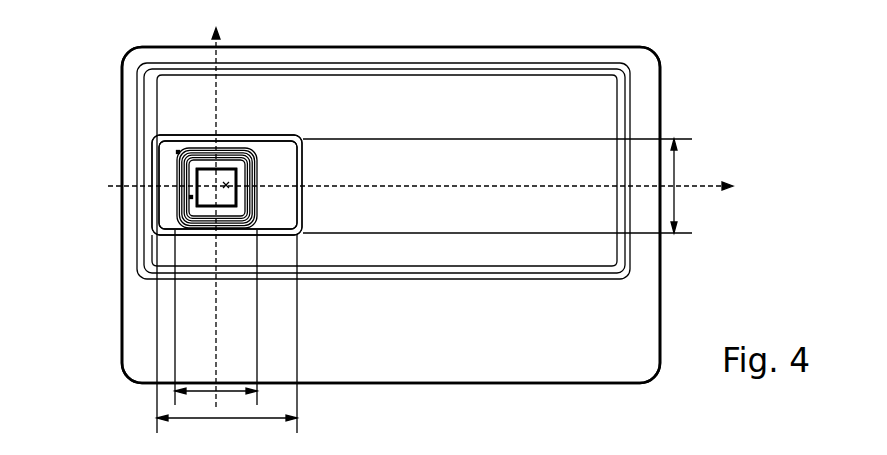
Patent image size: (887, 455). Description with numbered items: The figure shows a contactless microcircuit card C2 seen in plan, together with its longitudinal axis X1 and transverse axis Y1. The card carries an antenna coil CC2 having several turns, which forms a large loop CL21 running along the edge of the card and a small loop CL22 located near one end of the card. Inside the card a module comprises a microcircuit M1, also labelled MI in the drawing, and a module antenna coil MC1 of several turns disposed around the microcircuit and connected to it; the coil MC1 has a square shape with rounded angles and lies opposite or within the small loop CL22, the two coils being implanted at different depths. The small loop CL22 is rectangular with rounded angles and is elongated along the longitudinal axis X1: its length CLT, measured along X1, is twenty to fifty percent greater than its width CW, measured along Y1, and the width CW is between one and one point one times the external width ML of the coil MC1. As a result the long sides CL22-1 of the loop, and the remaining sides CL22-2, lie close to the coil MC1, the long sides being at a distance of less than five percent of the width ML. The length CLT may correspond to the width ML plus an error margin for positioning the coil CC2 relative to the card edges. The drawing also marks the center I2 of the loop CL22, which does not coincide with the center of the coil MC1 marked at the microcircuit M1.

The antenna coil CC2 is at (632, 54).
The contactless microcircuit card C2 is at (122, 64).
The large loop CL21 is at (139, 274).
The small loop CL22 is at (300, 176).
The biggest sides of the small loop CL22-1 is at (188, 135).
The second coil second portion CL22-2 is at (300, 173).
The module antenna coil MC1 is at (177, 153).
The module interior / IC MI is at (197, 184).
The microcircuit M1 is at (190, 197).
The center of the small loop I2 is at (228, 182).
The longitudinal axis X1 is at (436, 189).
The transverse axis Y1 is at (215, 204).
The width of the small loop CW is at (510, 186).
The external width of the module coil ML is at (216, 324).
The length of the small loop CLT is at (227, 290).